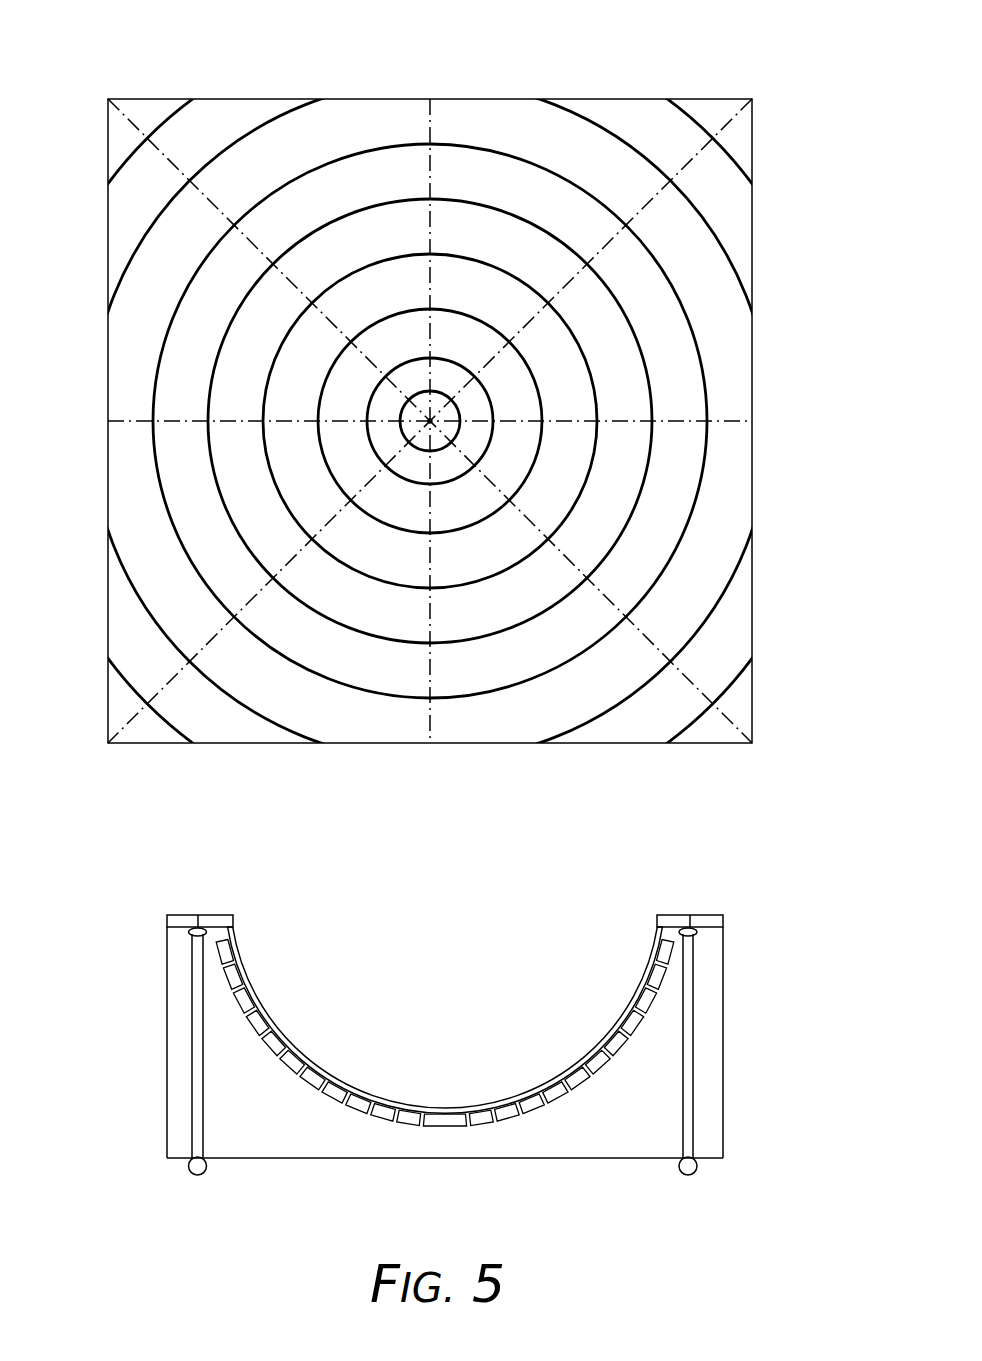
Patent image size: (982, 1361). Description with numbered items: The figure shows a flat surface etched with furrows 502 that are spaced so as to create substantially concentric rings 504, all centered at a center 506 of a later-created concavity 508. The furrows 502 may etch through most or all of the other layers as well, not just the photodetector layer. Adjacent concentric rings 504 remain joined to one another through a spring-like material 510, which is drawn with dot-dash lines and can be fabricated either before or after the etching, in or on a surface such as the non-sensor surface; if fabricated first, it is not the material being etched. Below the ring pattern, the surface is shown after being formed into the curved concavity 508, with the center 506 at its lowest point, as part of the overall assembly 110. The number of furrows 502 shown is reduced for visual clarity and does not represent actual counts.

The transducer assembly 110 is at (147, 876).
The etched furrows 502 is at (523, 278).
The substantially concentric rings 504 is at (450, 563).
The center 506 is at (430, 438).
The concavity 508 is at (507, 946).
The spring-like material 510 is at (652, 635).